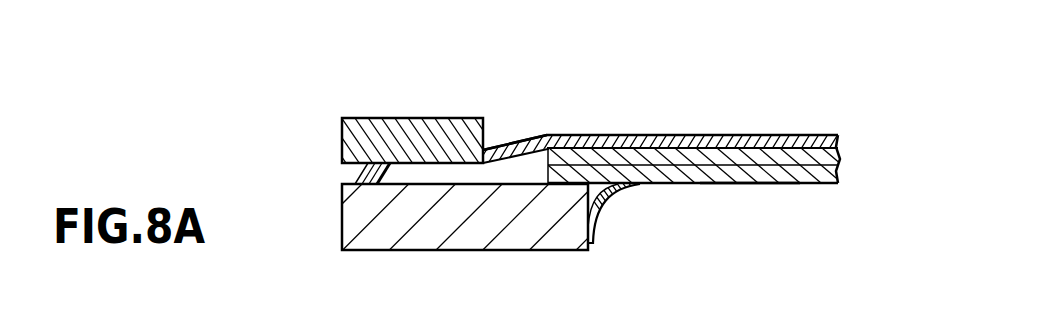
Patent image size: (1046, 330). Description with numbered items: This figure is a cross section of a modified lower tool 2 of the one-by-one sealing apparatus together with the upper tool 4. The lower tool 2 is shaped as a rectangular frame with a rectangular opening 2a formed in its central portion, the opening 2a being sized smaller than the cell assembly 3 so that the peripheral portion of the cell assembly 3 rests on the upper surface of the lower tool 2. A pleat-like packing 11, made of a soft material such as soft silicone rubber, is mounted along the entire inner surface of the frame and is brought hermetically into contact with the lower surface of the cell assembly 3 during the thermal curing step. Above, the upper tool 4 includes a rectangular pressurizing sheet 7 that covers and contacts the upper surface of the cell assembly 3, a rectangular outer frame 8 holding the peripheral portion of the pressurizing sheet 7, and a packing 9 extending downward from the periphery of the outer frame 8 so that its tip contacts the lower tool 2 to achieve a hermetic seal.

The lower tool 2 is at (493, 233).
The opening 2a is at (749, 200).
The cell assembly 3 is at (808, 183).
The upper tool 4 is at (731, 110).
The pressurizing sheet 7 is at (626, 137).
The outer frame 8 is at (433, 132).
The packing 9 is at (360, 179).
The pleat-like packing 11 is at (622, 197).